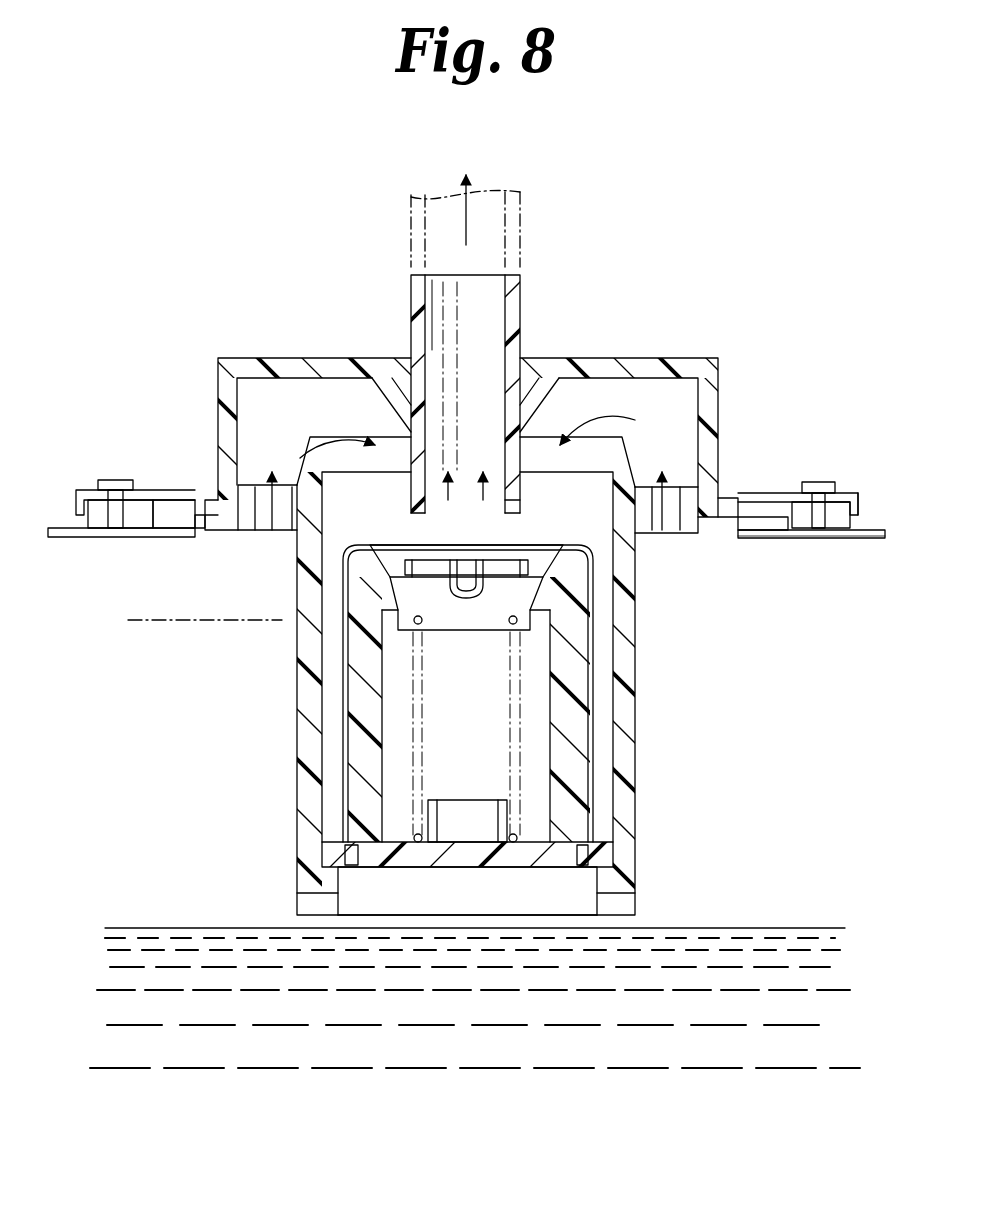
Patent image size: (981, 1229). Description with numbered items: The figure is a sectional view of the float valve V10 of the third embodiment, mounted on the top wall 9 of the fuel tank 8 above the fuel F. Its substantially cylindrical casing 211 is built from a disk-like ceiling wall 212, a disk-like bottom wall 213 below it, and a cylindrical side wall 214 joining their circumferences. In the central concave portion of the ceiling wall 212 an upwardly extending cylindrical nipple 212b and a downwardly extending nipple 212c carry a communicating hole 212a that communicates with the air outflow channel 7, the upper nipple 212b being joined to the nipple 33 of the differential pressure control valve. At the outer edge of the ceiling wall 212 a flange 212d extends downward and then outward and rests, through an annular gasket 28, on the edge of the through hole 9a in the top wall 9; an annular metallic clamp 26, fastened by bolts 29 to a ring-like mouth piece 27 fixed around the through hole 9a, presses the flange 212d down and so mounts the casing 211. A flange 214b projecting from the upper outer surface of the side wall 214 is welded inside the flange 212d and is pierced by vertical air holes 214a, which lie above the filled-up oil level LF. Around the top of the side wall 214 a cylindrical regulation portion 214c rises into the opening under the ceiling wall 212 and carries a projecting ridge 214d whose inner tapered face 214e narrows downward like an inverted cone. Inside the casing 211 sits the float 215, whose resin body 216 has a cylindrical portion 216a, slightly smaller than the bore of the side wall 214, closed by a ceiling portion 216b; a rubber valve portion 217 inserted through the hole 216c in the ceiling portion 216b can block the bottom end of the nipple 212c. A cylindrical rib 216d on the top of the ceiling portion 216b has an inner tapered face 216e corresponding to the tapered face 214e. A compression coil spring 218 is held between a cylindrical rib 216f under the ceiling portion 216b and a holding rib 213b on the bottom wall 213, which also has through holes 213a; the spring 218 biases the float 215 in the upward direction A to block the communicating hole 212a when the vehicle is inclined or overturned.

The air outflow channel 7 is at (487, 197).
The nipple 33 is at (512, 228).
The ceiling wall 212 is at (655, 375).
The communicating hole 212a is at (483, 330).
The upwardly extending cylindrical nipple 212b is at (515, 292).
The downwardly extending nipple 212c is at (523, 492).
The flange 212d is at (732, 502).
The side wall 214 is at (627, 625).
The air holes 214a is at (262, 532).
The flange 214b is at (243, 498).
The cylindrical regulation portion 214c is at (305, 448).
The projecting ridge 214d is at (612, 455).
The tapered face 214e is at (385, 452).
The casing 211 is at (645, 714).
The float 215 is at (596, 745).
The body 216 is at (203, 652).
The cylindrical portion 216a is at (360, 745).
The ceiling portion 216b is at (408, 592).
The hole 216c is at (487, 608).
The cylindrical rib 216d is at (543, 556).
The inner circumferential tapered face 216e is at (390, 552).
The cylindrical rib 216f is at (408, 636).
The valve portion 217 is at (411, 563).
The bottom wall 213 is at (418, 868).
The through holes 213a is at (352, 868).
The projection 213b is at (488, 838).
The compression coil spring 218 is at (520, 842).
The fuel tank 8 is at (872, 512).
The top wall 9 is at (860, 540).
The through hole 9a is at (740, 540).
The annular metallic clamp 26 is at (815, 483).
The ring-like mouth piece 27 is at (833, 540).
The annular gasket 28 is at (787, 540).
The bolts 29 is at (850, 495).
The flow direction A is at (652, 537).
The filled-up oil level LF is at (191, 619).
The fuel F is at (803, 940).
The float valve V10 is at (566, 906).